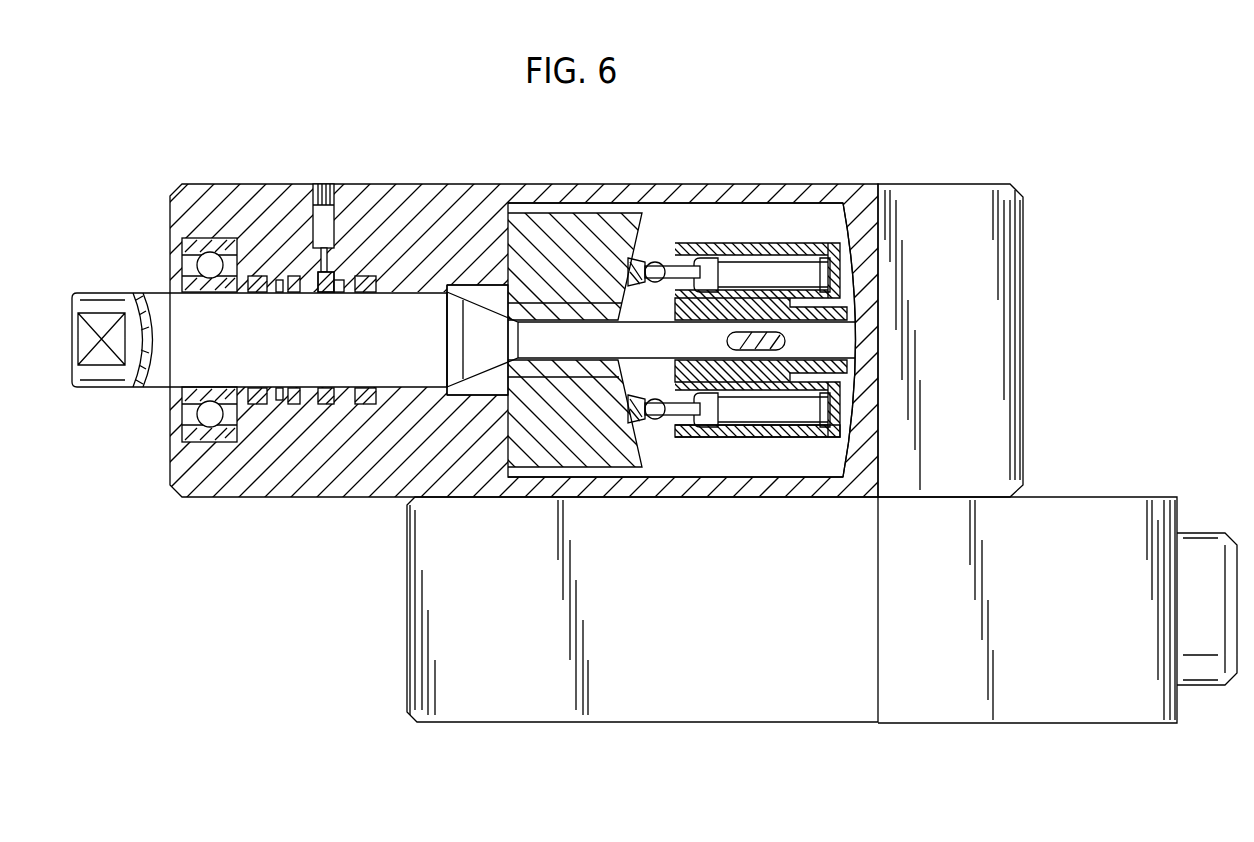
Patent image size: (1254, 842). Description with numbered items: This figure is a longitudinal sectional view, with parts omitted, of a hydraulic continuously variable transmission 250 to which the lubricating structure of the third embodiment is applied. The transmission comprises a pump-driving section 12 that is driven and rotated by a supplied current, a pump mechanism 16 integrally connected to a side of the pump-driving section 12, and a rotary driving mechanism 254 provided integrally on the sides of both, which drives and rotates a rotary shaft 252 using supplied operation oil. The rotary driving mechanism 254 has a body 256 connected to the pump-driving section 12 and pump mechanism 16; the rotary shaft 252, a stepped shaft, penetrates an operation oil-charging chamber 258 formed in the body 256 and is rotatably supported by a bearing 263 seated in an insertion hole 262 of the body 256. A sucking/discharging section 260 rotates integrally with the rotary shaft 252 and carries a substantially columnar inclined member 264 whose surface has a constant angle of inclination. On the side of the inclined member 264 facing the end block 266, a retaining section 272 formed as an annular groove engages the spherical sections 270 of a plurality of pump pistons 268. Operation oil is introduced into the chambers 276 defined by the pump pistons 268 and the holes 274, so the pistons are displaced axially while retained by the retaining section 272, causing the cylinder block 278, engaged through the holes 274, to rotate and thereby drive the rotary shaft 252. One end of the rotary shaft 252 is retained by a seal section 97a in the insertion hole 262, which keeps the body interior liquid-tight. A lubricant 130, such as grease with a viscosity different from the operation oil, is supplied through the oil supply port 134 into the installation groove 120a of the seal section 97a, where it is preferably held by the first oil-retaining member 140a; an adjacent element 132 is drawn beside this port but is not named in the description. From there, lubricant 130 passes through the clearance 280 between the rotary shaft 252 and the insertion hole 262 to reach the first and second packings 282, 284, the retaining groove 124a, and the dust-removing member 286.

The hydraulic continuously variable transmission 250 is at (952, 111).
The rotary shaft 252 is at (175, 365).
The rotary driving mechanism 254 is at (742, 184).
The body 256 is at (303, 470).
The operation oil-charging chamber 258 is at (822, 215).
The sucking/discharging section 260 is at (718, 442).
The insertion hole 262 is at (482, 288).
The inclined member 264 is at (565, 235).
The end block 266 is at (980, 360).
The pump pistons 268 is at (688, 270).
The spherical sections 270 is at (660, 262).
The retaining section 272 is at (645, 262).
The holes 274 is at (795, 243).
The chambers 276 is at (835, 268).
The cylinder block 278 is at (757, 450).
The clearance 280 is at (268, 305).
The first packing 282 is at (366, 293).
The second packing 284 is at (283, 295).
The dust-removing member 286 is at (260, 388).
The seal section 97a is at (316, 220).
The oil supply port 134 is at (322, 184).
The lubricant 130 is at (330, 272).
The retaining ring 132 is at (340, 280).
The first oil-retaining member 140a is at (326, 293).
The retaining groove 124a is at (286, 388).
The installation groove 120a is at (336, 388).
The bearing 263 is at (212, 442).
The pump mechanism 16 is at (705, 724).
The pump-driving section 12 is at (1028, 724).